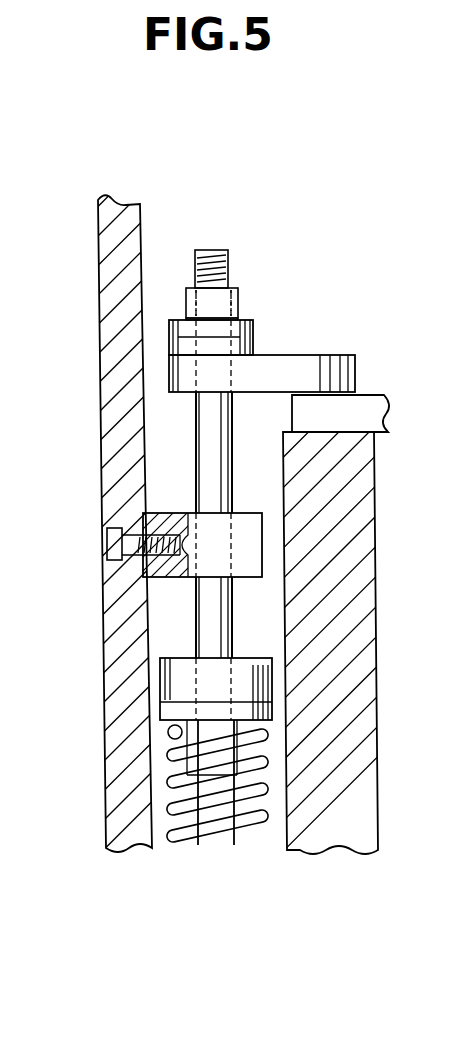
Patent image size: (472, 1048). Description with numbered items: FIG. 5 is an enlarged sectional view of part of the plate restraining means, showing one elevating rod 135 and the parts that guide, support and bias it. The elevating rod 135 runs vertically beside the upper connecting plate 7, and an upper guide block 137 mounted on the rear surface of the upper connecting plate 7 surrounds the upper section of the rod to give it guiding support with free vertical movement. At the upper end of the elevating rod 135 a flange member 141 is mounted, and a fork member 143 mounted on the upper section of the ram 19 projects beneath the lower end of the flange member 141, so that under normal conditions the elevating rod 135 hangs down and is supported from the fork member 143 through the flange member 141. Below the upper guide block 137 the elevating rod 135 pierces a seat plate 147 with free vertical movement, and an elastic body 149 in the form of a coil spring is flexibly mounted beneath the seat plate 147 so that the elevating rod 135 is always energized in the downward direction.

The upper connecting plate 7 is at (122, 447).
The ram 19 is at (348, 626).
The elevating rod 135 is at (213, 619).
The upper guide block 137 is at (165, 513).
The flange member 141 is at (169, 342).
The fork member 143 is at (270, 368).
The seat plate 147 is at (183, 675).
The elastic body 149 is at (170, 790).